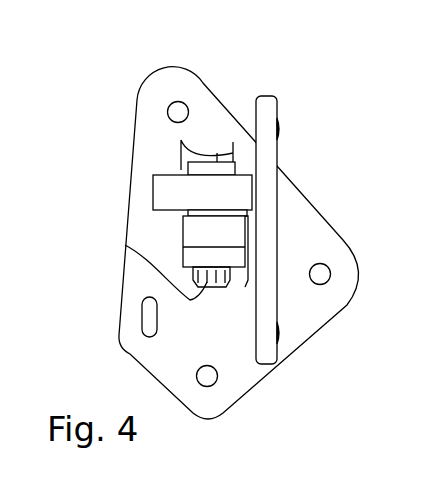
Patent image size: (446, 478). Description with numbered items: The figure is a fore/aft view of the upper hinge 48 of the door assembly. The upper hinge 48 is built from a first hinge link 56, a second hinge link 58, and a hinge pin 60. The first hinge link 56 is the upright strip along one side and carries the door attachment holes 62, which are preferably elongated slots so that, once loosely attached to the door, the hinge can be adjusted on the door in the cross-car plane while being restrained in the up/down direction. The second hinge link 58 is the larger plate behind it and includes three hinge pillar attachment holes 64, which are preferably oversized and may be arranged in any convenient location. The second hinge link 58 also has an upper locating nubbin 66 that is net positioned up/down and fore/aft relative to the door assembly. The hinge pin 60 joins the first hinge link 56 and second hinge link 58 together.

The upper hinge 48 is at (128, 70).
The first hinge link 56 is at (273, 107).
The second hinge link 58 is at (150, 112).
The hinge pin 60 is at (125, 245).
The door attachment holes 62 is at (277, 138).
The hinge pillar attachment holes 64 is at (183, 103).
The upper locating nubbin 66 is at (155, 311).